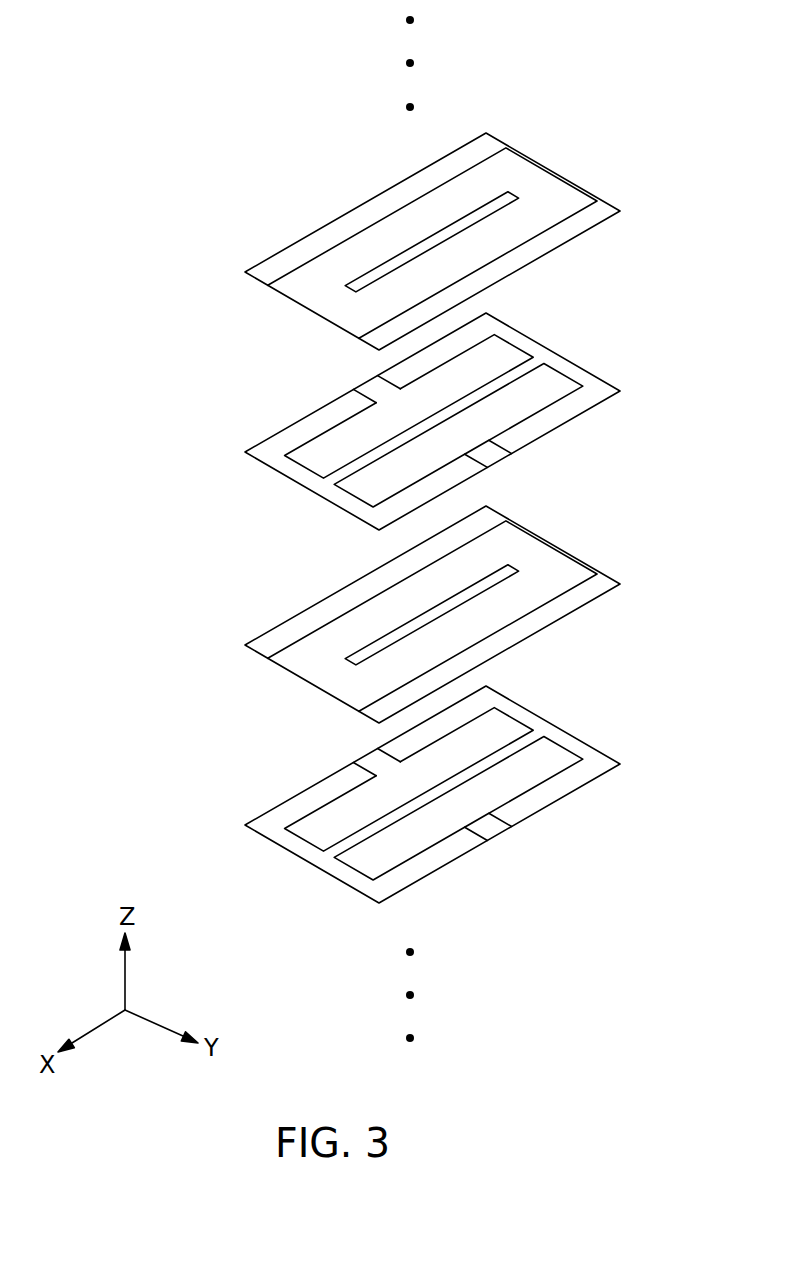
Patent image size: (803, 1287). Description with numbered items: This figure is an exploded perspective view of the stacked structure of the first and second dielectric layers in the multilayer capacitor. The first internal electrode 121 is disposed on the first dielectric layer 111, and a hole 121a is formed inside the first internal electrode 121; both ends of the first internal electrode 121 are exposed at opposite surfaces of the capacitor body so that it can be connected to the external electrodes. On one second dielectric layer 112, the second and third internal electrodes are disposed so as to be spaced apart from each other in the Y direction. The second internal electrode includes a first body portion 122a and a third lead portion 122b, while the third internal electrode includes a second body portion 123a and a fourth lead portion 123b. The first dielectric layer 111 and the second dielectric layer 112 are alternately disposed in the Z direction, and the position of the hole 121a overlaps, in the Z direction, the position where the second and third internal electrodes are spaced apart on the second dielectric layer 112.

The first dielectric layer 111 is at (281, 261).
The second dielectric layer 112 is at (348, 504).
The first internal electrode 121 is at (540, 185).
The hole 121a is at (493, 208).
The first body portion 122a is at (545, 387).
The third lead portion 122b is at (497, 457).
The second body portion 123a is at (322, 457).
The fourth lead portion 123b is at (362, 378).